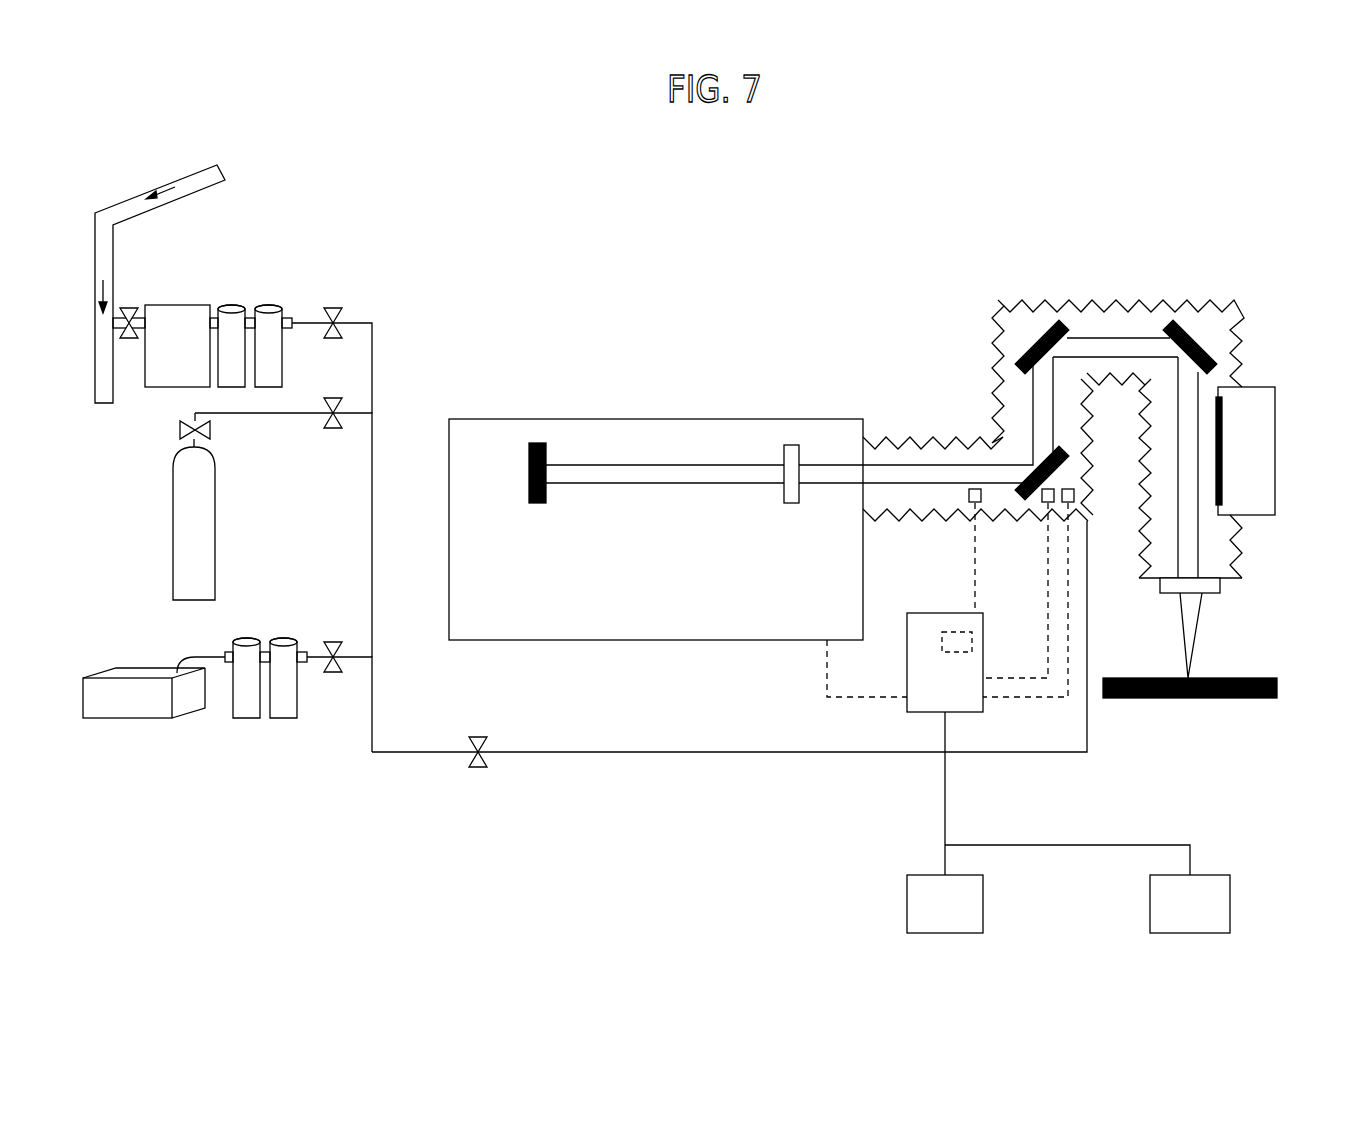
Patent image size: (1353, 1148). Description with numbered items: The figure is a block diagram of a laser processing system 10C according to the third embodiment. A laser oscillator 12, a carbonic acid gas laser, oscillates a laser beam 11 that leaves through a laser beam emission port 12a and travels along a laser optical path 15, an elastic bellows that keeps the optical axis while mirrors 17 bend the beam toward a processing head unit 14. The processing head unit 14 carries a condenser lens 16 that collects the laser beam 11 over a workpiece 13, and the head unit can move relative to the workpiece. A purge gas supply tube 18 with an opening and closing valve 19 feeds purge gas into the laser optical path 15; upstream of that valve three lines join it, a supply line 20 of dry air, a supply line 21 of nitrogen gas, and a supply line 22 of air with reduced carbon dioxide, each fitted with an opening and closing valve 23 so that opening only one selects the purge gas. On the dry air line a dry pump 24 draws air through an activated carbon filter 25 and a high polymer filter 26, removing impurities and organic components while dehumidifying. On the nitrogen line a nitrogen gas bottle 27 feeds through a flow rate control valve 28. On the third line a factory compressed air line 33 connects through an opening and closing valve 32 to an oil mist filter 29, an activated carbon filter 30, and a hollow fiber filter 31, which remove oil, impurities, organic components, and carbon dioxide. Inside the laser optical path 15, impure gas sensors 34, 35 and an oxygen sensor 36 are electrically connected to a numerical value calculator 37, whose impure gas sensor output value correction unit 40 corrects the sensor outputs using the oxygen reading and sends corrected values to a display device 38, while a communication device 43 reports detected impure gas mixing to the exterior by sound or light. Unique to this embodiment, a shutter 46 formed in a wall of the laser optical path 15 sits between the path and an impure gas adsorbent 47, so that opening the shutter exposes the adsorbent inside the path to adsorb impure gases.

The laser processing system 10C is at (598, 266).
The laser beam 11 is at (822, 466).
The laser oscillator 12 is at (649, 418).
The laser beam emission port 12a is at (866, 458).
The workpiece 13 is at (1259, 700).
The processing head unit 14 is at (1242, 580).
The laser optical path 15 is at (1247, 373).
The condenser lens 16 is at (1222, 595).
The mirrors 17 is at (1057, 452).
The purge gas supply tube 18 is at (694, 756).
The opening and closing valve 19 is at (480, 768).
The supply line of the dry air 20 is at (358, 660).
The supply line of the nitrogen gas 21 is at (358, 416).
The supply line of the air in which carbon dioxide is reduced 22 is at (366, 320).
The opening and closing valve 23 is at (332, 307).
The dry pump 24 is at (128, 722).
The activated carbon filter 25 is at (248, 722).
The high polymer filter 26 is at (285, 722).
The nitrogen gas bottle 27 is at (172, 572).
The flow rate control valve 28 is at (178, 430).
The oil mist filter 29 is at (180, 306).
The activated carbon filter 30 is at (236, 306).
The hollow fiber filter 31 is at (272, 306).
The opening and closing valve 32 is at (132, 310).
The compressed air line 33 is at (124, 205).
The impure gas sensor 34 is at (1074, 496).
The impure gas sensor 35 is at (1042, 503).
The oxygen sensor 36 is at (981, 503).
The numerical value calculator 37 is at (921, 714).
The display device 38 is at (907, 906).
The impure gas sensor output value correction unit 40 is at (952, 652).
The communication device 43 is at (1150, 906).
The shutter 46 is at (1223, 437).
The impure gas adsorbent 47 is at (1257, 478).